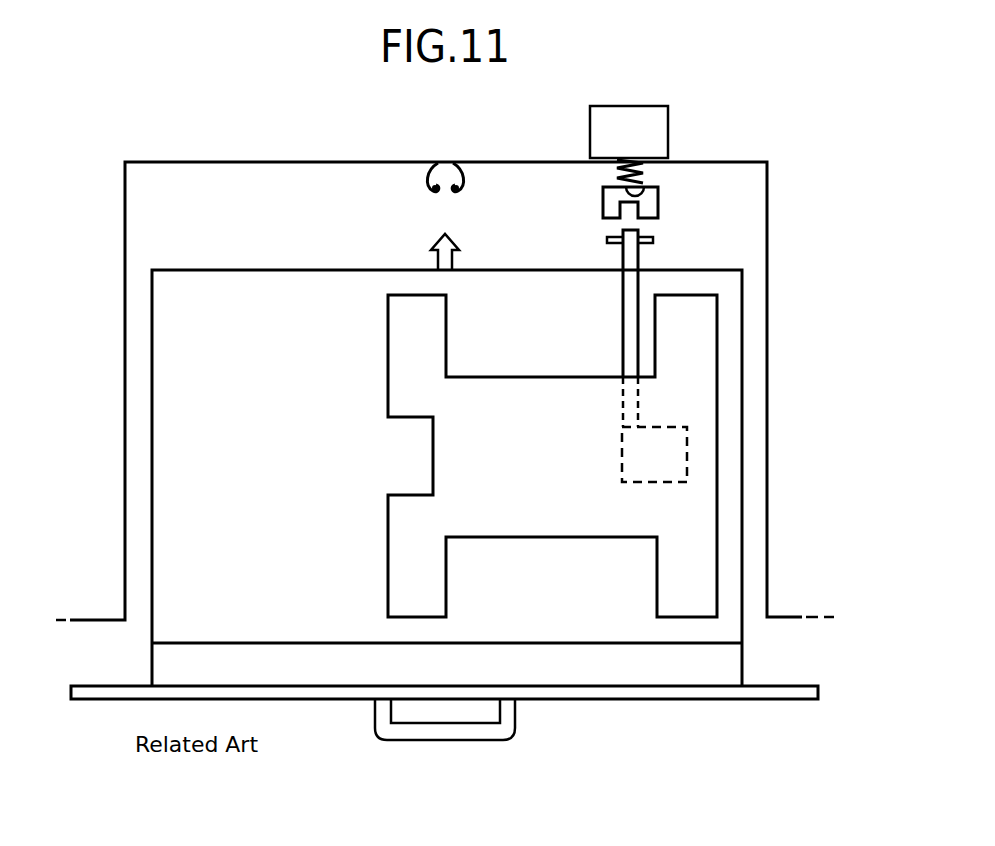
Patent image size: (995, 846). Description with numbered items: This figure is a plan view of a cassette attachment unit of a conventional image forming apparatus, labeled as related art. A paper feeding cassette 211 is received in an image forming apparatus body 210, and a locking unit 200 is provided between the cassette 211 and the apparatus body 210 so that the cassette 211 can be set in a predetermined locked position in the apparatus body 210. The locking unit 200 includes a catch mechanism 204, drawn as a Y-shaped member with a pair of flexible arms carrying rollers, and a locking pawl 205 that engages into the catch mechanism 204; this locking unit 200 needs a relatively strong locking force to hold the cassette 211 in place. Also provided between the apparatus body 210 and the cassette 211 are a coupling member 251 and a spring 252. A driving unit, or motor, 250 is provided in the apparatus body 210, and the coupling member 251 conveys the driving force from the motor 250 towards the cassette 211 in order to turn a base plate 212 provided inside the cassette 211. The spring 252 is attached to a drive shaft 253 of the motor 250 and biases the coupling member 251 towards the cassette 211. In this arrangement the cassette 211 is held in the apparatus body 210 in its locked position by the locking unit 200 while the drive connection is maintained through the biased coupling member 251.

The locking unit 200 is at (430, 217).
The catch mechanism 204 is at (429, 177).
The locking pawl 205 is at (457, 252).
The image forming apparatus body 210 is at (796, 606).
The paper feeding cassette 211 is at (667, 688).
The base plate 212 is at (511, 518).
The driving unit (motor) 250 is at (591, 122).
The coupling member 251 is at (605, 212).
The spring 252 is at (615, 178).
The drive shaft 253 is at (648, 191).